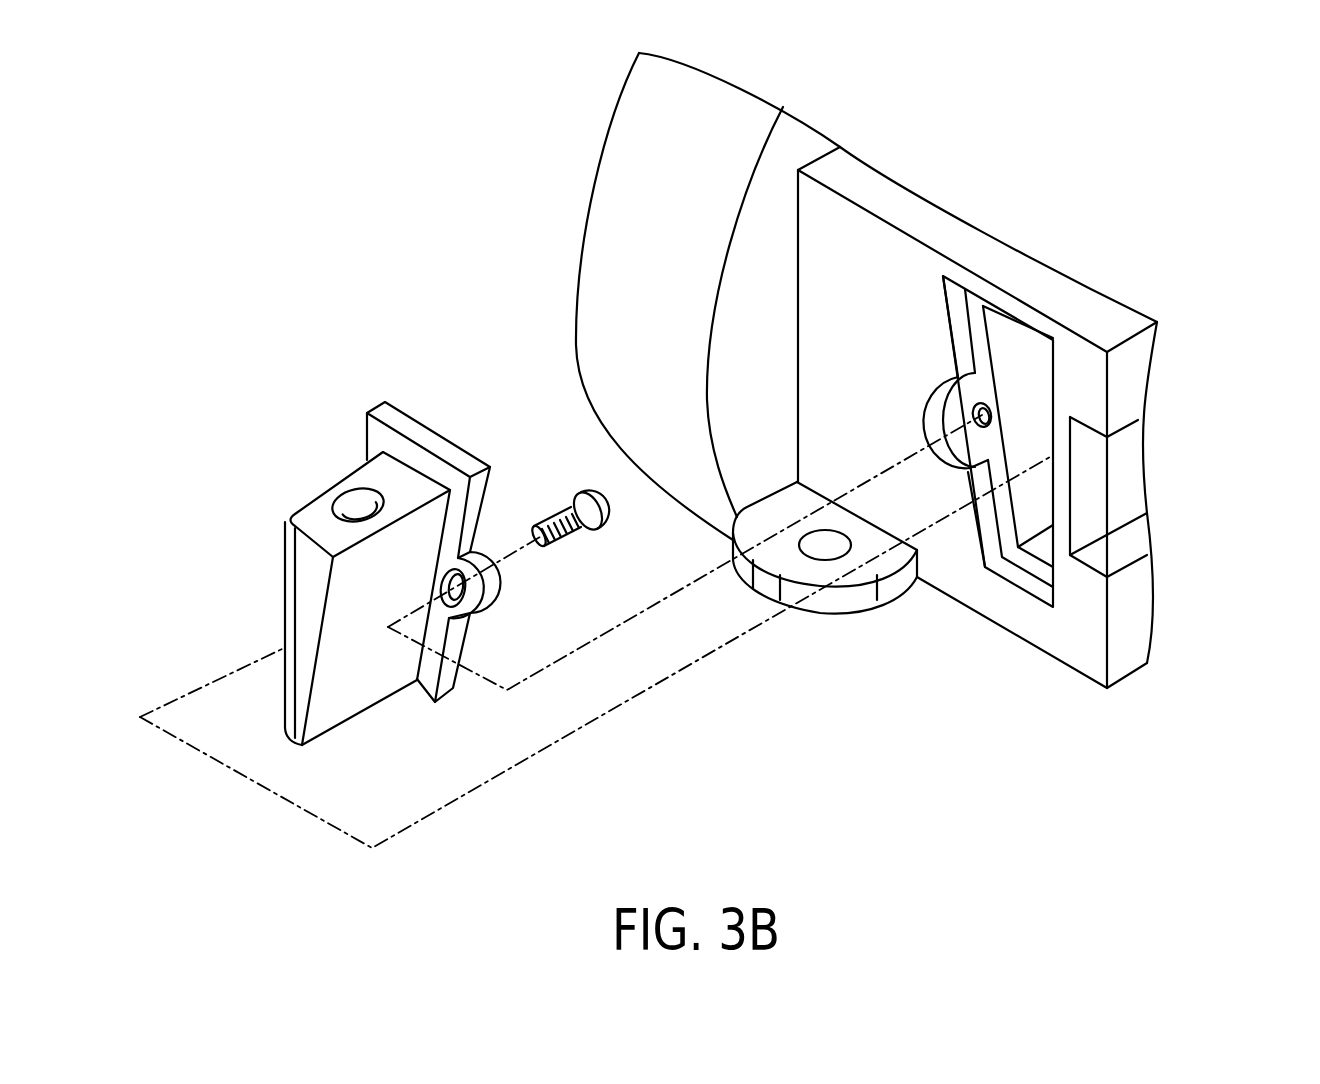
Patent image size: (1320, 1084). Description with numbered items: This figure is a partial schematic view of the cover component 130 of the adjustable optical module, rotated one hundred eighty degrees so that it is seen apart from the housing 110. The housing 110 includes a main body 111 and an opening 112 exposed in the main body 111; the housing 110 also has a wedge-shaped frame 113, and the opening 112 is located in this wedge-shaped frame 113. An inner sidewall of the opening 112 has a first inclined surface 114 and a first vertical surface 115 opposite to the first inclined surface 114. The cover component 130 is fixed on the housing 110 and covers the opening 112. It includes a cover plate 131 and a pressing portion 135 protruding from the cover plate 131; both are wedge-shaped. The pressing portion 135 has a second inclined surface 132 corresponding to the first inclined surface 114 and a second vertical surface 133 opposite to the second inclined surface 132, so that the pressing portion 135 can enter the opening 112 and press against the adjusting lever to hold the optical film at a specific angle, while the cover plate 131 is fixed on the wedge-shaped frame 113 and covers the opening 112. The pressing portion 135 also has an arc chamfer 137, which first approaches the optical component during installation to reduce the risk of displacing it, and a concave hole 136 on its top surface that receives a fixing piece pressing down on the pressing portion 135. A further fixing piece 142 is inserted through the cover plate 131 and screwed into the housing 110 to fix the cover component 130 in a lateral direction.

The housing 110 is at (919, 370).
The main body 111 is at (1110, 323).
The opening 112 is at (959, 426).
The wedge-shaped frame 113 is at (950, 322).
The first inclined surface 114 is at (1010, 372).
The first vertical surface 115 is at (1053, 427).
The cover component 130 is at (344, 568).
The cover plate 131 is at (437, 432).
The second inclined surface 132 is at (343, 668).
The second vertical surface 133 is at (283, 668).
The pressing portion 135 is at (285, 515).
The concave hole 136 is at (355, 508).
The arc chamfer 137 is at (287, 586).
The fixing piece 142 is at (553, 515).